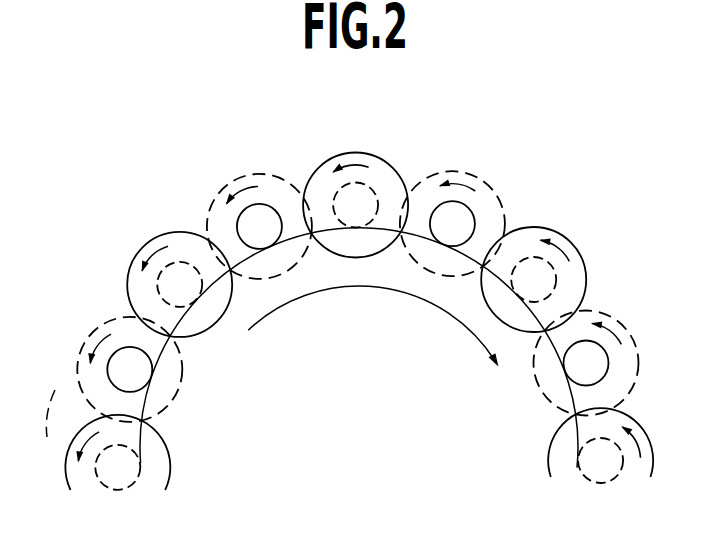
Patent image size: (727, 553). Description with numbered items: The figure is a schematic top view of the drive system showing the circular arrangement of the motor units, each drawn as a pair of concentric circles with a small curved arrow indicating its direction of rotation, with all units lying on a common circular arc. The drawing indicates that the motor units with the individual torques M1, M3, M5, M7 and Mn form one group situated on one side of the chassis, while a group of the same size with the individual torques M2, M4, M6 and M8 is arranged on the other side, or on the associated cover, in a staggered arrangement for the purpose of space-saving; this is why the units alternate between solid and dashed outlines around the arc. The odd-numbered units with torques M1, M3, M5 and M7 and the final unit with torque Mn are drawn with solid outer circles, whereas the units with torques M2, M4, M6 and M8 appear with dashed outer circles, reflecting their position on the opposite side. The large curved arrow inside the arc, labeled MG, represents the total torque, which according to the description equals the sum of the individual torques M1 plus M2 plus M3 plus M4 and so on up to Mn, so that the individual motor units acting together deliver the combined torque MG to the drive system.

The individual torque of first motor unit M1 is at (617, 445).
The individual torque of second motor unit M2 is at (591, 362).
The individual torque of third motor unit M3 is at (540, 275).
The individual torque of fourth motor unit M4 is at (452, 211).
The individual torque of fifth motor unit M5 is at (355, 192).
The individual torque of sixth motor unit M6 is at (259, 212).
The individual torque of seventh motor unit M7 is at (175, 277).
The individual torque of eighth motor unit M8 is at (122, 367).
The individual torque of nth motor unit Mn is at (103, 452).
The total torque MG is at (392, 288).